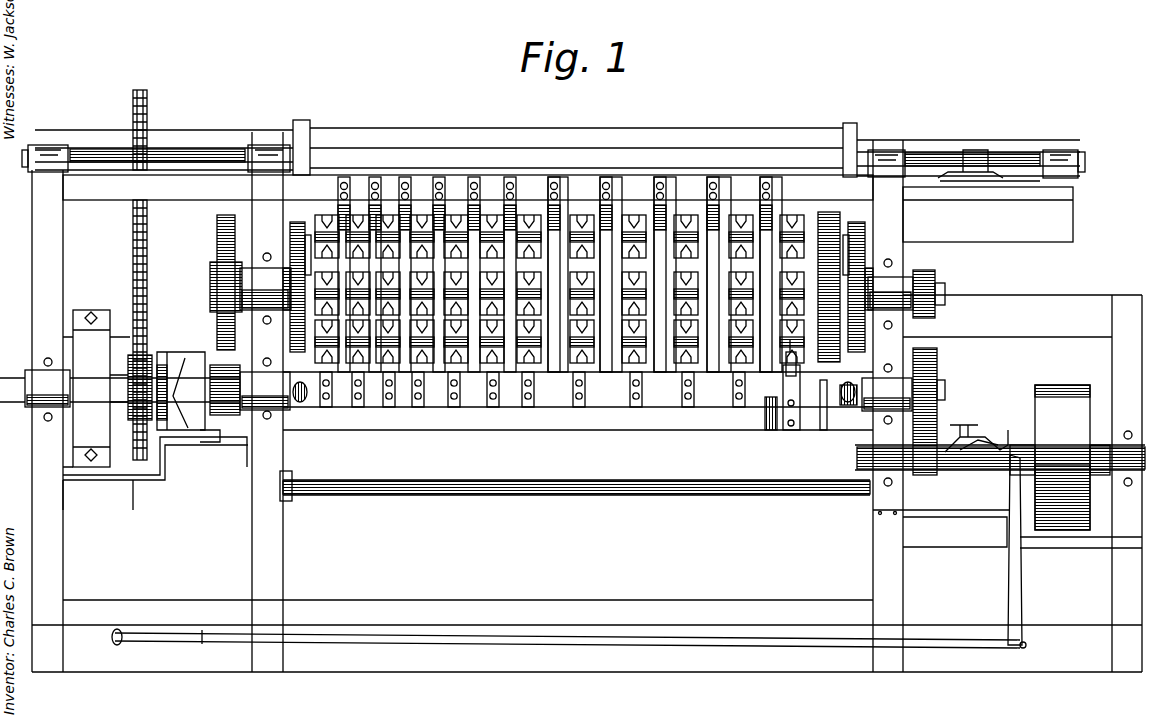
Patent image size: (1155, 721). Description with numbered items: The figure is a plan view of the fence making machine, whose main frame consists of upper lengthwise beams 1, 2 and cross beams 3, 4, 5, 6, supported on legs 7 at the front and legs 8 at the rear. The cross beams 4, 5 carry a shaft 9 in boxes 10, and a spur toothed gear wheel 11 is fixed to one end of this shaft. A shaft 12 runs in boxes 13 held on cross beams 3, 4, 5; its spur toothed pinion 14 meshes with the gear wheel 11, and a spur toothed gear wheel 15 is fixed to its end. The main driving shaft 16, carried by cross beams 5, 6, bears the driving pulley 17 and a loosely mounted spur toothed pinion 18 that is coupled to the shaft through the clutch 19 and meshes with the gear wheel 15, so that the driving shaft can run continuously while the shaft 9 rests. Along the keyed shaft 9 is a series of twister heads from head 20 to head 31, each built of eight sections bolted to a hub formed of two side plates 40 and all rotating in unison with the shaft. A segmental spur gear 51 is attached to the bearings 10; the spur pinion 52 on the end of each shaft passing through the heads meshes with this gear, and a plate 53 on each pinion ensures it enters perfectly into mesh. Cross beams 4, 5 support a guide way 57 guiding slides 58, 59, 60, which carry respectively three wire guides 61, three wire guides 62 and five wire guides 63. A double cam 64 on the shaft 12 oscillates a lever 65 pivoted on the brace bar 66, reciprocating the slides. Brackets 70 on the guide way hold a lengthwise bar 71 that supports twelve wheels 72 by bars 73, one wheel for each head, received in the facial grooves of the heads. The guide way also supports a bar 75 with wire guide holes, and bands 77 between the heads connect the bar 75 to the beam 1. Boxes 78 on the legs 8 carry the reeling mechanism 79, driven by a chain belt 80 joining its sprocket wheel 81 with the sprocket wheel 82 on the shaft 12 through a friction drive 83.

The upper lengthwise beam 1 is at (468, 187).
The upper lengthwise beam 2 is at (511, 510).
The cross beam 3 is at (47, 421).
The cross beam 4 is at (267, 402).
The cross beam 5 is at (888, 406).
The cross beam 6 is at (1022, 483).
The legs 7 is at (587, 648).
The legs 8 is at (553, 144).
The shaft 9 is at (945, 292).
The boxes 10 is at (265, 289).
The spur toothed gear wheel 11 is at (217, 237).
The shaft 12 is at (945, 389).
The boxes 13 is at (456, 390).
The spur toothed pinion 14 is at (225, 418).
The spur toothed gear wheel 15 is at (937, 407).
The main driving shaft 16 is at (845, 423).
The driving pulley 17 is at (1007, 466).
The spur toothed pinion 18 is at (712, 473).
The clutch 19 is at (985, 532).
The head 20 is at (325, 213).
The head 31 is at (800, 215).
The side plates 40 is at (890, 293).
The segmental spur gear 51 is at (290, 268).
The spur pinion 52 is at (579, 275).
The plate 53 is at (295, 258).
The guide way 57 is at (578, 409).
The slide 58 is at (326, 408).
The slide 59 is at (418, 408).
The slide 60 is at (708, 408).
The wire guides 61 is at (345, 408).
The wire guides 62 is at (460, 408).
The wire guides 63 is at (535, 408).
The double cam 64 is at (183, 352).
The lever 65 is at (203, 438).
The brace bar 66 is at (165, 458).
The brackets 70 is at (822, 431).
The bar 71 is at (780, 431).
The wheels 72 is at (768, 398).
The bars 73 is at (790, 431).
The bar 75 is at (670, 408).
The bands 77 is at (376, 177).
The boxes 78 is at (55, 147).
The reeling mechanism 79 is at (557, 176).
The chain belt 80 is at (152, 330).
The sprocket wheel 81 is at (148, 130).
The sprocket wheel 82 is at (140, 409).
The friction drive 83 is at (96, 376).